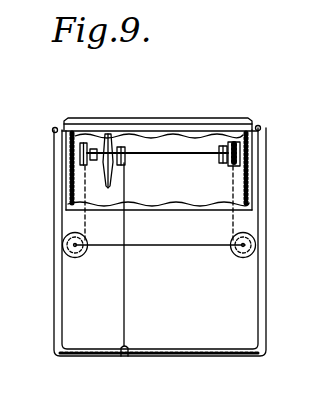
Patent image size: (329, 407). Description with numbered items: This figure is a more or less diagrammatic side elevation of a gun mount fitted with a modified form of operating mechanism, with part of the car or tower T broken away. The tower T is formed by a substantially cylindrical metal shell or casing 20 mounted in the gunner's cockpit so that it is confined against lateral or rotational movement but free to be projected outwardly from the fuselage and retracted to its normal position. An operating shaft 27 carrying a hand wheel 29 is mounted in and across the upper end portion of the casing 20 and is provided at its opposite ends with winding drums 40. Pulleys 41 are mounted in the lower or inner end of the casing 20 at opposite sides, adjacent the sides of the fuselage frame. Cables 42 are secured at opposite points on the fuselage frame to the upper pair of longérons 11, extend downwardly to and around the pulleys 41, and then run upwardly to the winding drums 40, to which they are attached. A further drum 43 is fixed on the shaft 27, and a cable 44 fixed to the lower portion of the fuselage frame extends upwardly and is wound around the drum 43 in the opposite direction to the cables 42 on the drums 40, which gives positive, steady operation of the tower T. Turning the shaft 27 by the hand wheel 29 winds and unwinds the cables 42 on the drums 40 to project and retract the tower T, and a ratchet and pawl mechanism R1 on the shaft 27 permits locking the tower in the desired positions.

The upper longérons 11 is at (52, 130).
The cables 42 is at (61, 152).
The car or tower T is at (204, 118).
The ratchet and pawl mechanism R1 is at (82, 131).
The operating shaft 27 is at (177, 155).
The winding drums 40 is at (86, 167).
The drum 43 is at (124, 160).
The hand wheel 29 is at (114, 186).
The cable 44 is at (125, 303).
The shell or casing 20 is at (165, 233).
The pulleys 41 is at (80, 258).